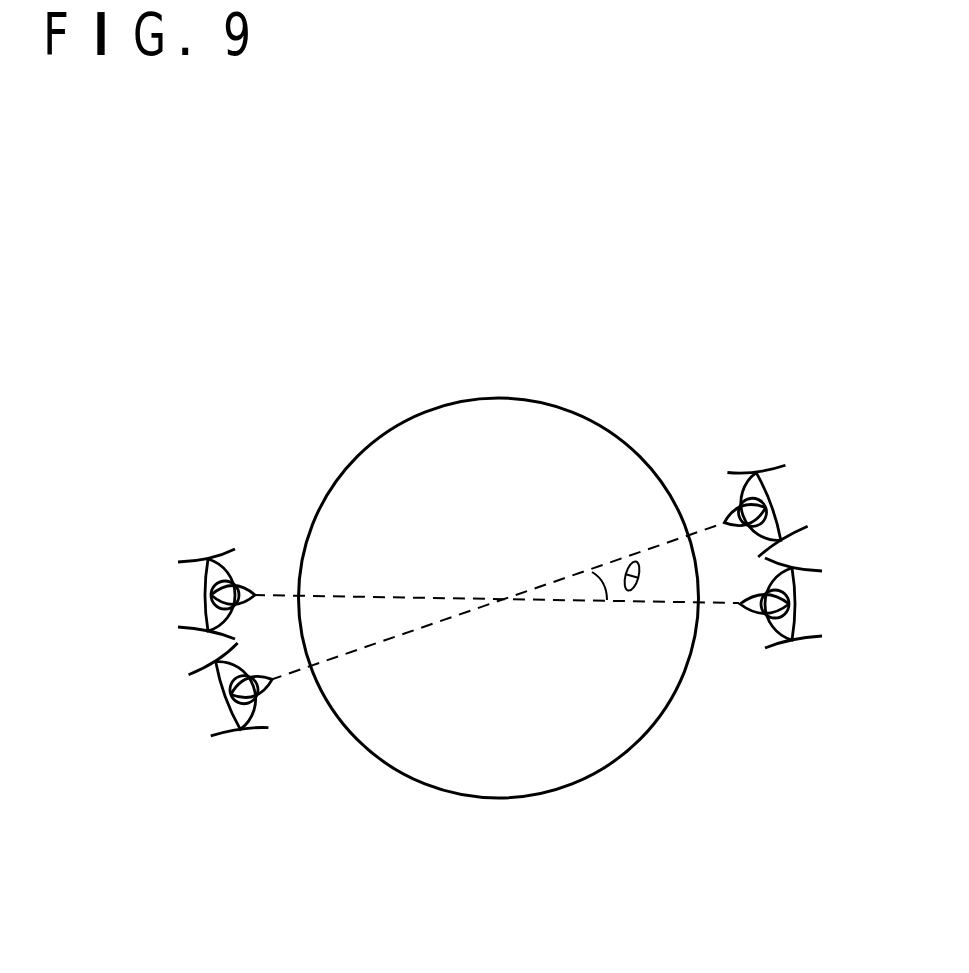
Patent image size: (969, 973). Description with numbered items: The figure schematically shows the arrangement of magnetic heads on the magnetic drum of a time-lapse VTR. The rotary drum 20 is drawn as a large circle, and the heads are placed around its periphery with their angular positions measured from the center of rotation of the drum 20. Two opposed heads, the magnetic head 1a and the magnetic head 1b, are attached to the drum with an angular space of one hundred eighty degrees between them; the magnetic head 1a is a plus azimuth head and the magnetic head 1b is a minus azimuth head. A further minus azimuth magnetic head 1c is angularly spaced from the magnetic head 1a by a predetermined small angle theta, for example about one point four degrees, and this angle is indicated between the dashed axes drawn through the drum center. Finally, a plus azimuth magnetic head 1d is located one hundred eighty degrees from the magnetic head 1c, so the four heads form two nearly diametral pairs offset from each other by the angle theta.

The rotary drum 20 is at (499, 535).
The magnetic head 1a is at (760, 454).
The magnetic head 1b is at (235, 747).
The magnetic head 1c is at (791, 667).
The magnetic head 1d is at (207, 537).